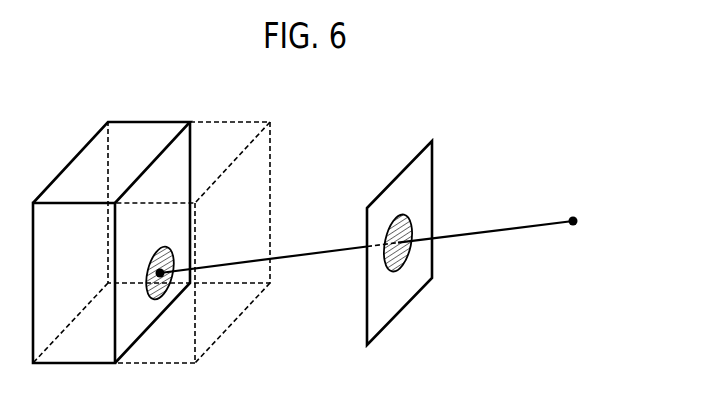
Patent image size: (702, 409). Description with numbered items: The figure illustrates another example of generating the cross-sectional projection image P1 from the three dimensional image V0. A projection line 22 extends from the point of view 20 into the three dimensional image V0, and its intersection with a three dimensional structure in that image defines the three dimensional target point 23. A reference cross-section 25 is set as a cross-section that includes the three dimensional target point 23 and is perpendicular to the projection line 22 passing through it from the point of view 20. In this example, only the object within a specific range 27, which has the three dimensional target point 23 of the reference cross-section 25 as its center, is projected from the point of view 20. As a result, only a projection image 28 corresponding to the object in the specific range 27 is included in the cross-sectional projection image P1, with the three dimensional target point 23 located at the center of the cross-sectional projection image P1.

The three dimensional image V0 is at (151, 219).
The reference cross-section 25 is at (169, 141).
The specific range 27 is at (228, 288).
The three dimensional target point 23 is at (155, 301).
The projection line 22 is at (527, 225).
The cross-sectional projection image P1 is at (417, 156).
The projection image 28 is at (410, 219).
The point of view 20 is at (578, 227).